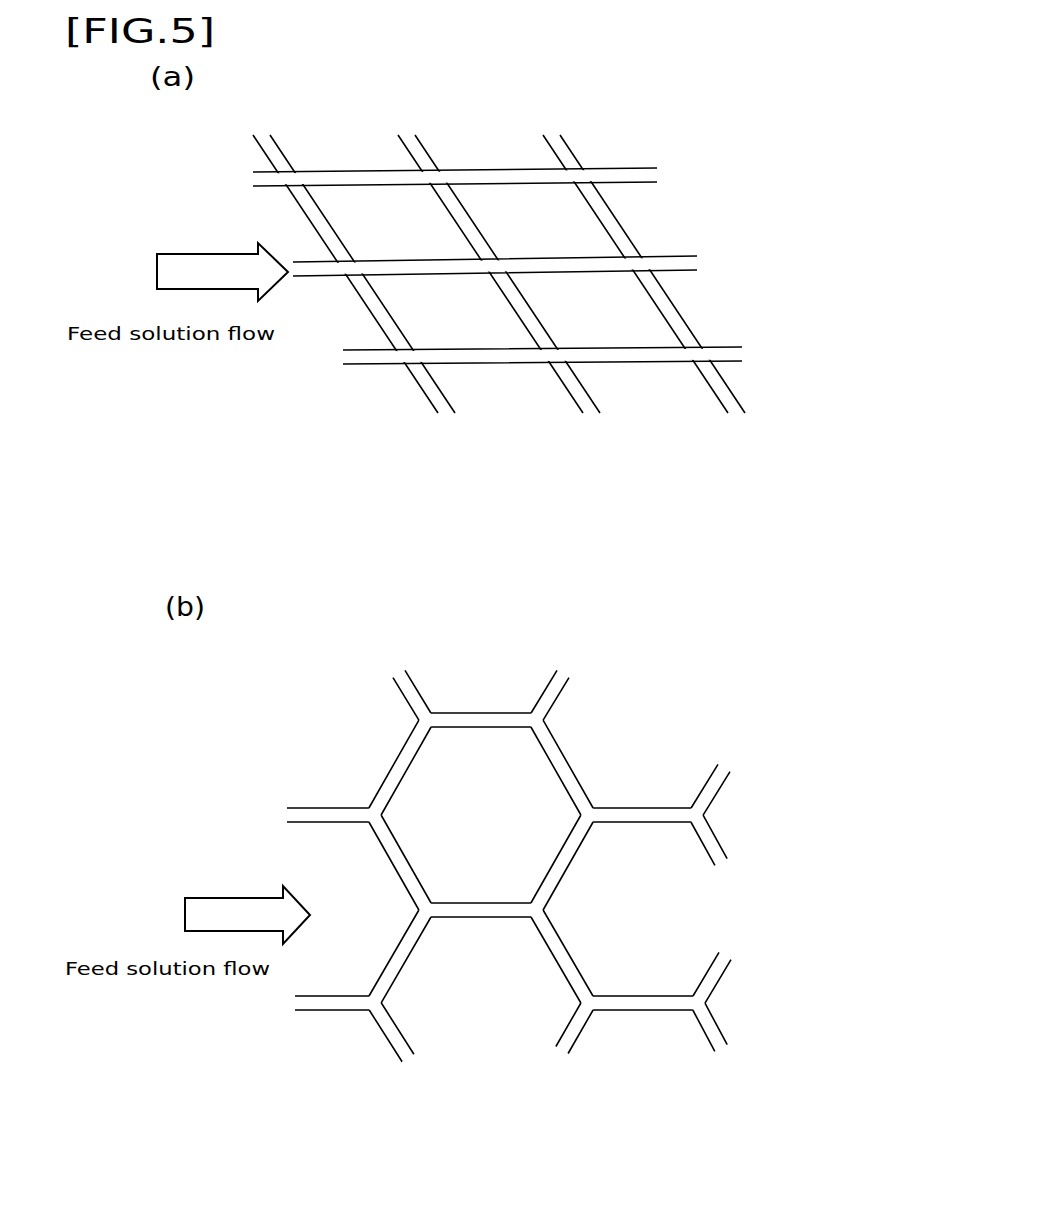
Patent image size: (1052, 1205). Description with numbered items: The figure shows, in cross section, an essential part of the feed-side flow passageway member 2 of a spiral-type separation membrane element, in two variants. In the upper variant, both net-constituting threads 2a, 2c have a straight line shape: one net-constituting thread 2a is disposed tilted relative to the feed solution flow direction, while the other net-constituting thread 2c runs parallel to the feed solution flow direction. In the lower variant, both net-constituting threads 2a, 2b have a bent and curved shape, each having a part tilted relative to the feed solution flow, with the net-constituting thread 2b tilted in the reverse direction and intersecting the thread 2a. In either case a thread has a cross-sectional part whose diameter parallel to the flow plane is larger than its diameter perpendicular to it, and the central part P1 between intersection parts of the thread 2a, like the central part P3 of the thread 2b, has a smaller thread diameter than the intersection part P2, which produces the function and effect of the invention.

The feed-side flow passageway member 2 is at (663, 150).
The net-constituting thread 2a is at (405, 148).
The net-constituting thread 2b is at (412, 763).
The net-constituting thread 2c is at (375, 367).
The central part P1 is at (482, 224).
The intersection part P2 is at (430, 192).
The central part P3 is at (576, 864).